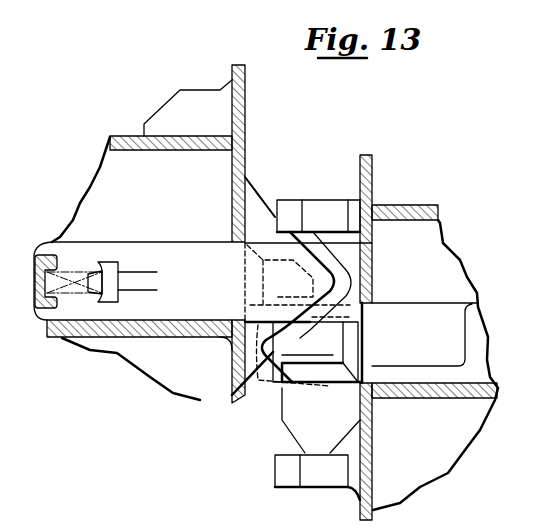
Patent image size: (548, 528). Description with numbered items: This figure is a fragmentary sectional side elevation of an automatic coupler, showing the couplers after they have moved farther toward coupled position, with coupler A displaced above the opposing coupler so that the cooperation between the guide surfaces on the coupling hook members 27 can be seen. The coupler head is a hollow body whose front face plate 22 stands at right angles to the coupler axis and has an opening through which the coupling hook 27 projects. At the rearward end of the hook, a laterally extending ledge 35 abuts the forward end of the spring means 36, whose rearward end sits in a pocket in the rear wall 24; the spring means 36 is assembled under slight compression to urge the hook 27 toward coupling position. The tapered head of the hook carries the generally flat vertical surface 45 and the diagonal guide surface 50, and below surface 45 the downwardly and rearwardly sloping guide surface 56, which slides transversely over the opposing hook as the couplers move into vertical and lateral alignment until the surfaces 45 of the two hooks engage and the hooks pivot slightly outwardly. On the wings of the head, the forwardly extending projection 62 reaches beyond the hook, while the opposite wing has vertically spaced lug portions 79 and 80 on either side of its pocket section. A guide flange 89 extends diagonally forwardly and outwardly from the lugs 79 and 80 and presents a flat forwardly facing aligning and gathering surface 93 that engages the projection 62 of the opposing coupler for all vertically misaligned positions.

The coupler A is at (122, 137).
The front face plate 22 is at (245, 100).
The rear wall 24 is at (40, 247).
The coupling hook 27 is at (262, 238).
The ledge 35 is at (135, 272).
The spring means 36 is at (68, 298).
The vertical surface 45 is at (356, 347).
The guide surface 50 is at (290, 352).
The guide surface 56 is at (282, 387).
The projection 62 is at (327, 240).
The lug portion 79 is at (293, 200).
The lug portion 80 is at (300, 487).
The guide flange 89 is at (282, 400).
The aligning and gathering surface 93 is at (302, 420).